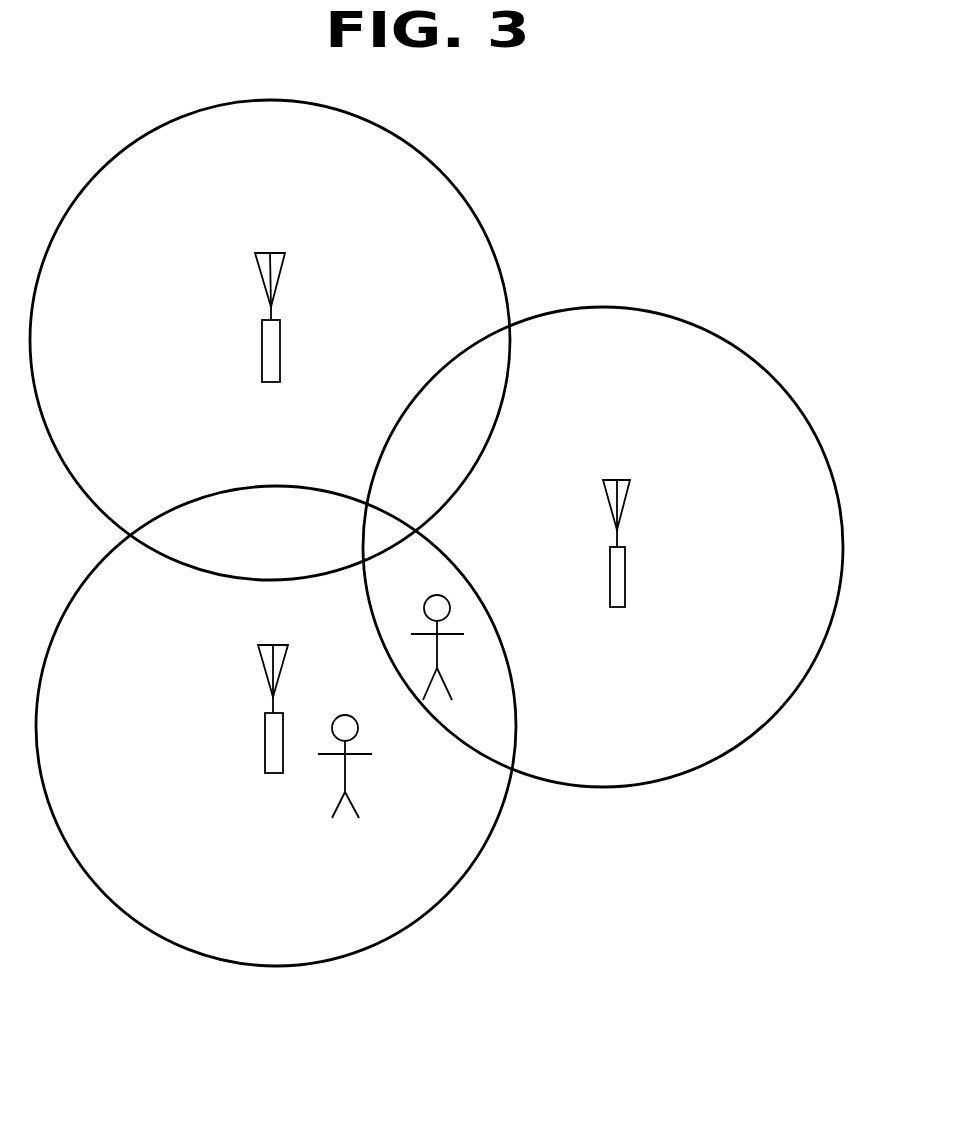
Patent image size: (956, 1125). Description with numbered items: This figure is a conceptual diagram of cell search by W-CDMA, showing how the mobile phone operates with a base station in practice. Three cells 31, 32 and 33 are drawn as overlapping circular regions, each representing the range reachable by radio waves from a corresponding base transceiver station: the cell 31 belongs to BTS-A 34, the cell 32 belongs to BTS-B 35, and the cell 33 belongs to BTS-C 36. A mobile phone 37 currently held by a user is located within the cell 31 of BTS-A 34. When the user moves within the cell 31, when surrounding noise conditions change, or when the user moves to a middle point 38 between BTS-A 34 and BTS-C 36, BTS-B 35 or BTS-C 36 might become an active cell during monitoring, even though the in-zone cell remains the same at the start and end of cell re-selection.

The cell 31 is at (475, 858).
The cell 32 is at (442, 173).
The cell 33 is at (797, 403).
The BTS-A 34 is at (265, 733).
The BTS-B 35 is at (280, 348).
The BTS-C 36 is at (625, 585).
The mobile phone 37 is at (343, 715).
The point 38 is at (443, 597).